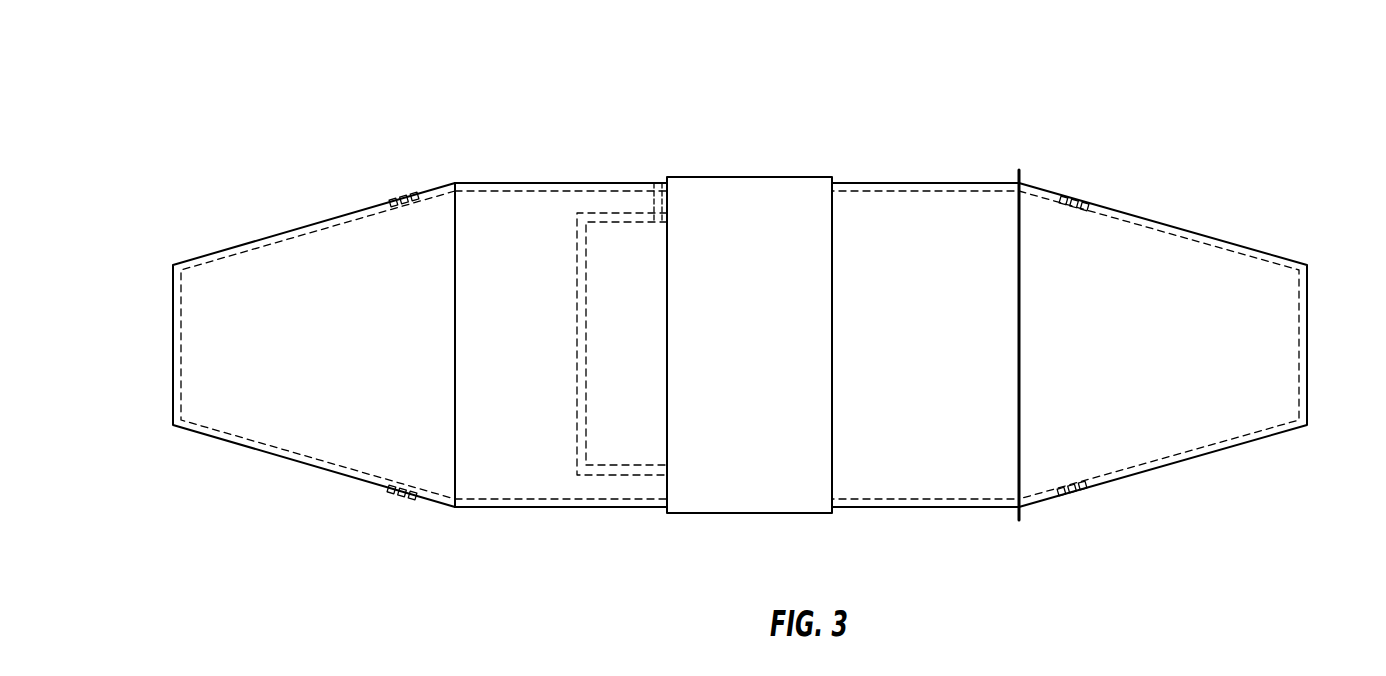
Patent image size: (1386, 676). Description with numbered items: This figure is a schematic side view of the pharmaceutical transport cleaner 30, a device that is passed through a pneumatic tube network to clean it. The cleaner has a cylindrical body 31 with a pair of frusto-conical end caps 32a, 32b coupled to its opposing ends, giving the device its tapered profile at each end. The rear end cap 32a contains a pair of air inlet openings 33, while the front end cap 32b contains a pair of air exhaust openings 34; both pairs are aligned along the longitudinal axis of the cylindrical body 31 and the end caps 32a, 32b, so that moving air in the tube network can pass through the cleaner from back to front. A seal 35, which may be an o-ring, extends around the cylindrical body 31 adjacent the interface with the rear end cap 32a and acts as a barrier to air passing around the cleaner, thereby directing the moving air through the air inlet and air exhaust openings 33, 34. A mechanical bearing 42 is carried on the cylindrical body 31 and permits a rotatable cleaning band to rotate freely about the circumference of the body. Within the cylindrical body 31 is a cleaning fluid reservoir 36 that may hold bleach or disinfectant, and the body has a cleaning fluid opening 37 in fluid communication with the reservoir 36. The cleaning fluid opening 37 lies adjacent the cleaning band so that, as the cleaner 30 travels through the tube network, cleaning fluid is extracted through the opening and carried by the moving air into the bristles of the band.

The pharmaceutical transport cleaner 30 is at (768, 330).
The cylindrical body 31 is at (906, 183).
The frusto-conical end cap 32a is at (1308, 285).
The frusto-conical end cap 32b is at (278, 455).
The air inlet openings 33 is at (1066, 198).
The air exhaust openings 34 is at (411, 199).
The seal 35 is at (1015, 517).
The cleaning fluid reservoir 36 is at (583, 478).
The cleaning fluid opening 37 is at (640, 193).
The mechanical bearing 42 is at (705, 495).